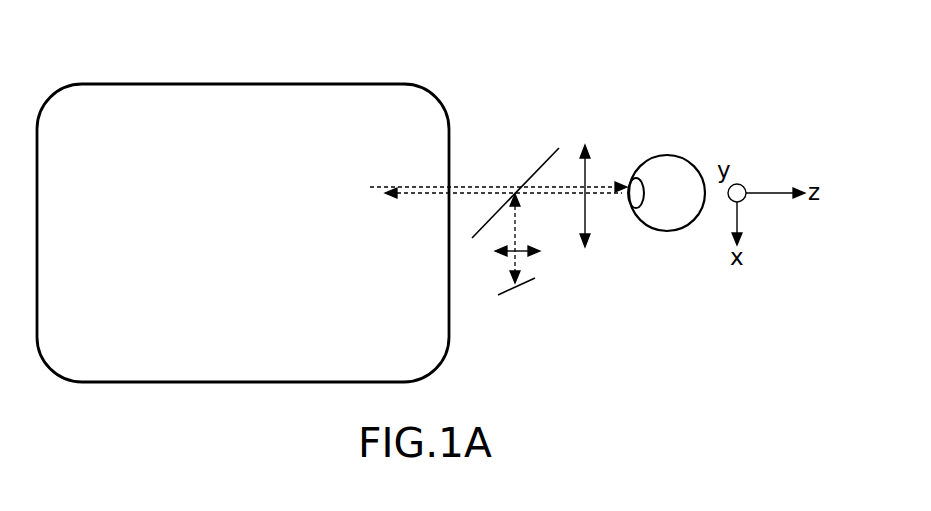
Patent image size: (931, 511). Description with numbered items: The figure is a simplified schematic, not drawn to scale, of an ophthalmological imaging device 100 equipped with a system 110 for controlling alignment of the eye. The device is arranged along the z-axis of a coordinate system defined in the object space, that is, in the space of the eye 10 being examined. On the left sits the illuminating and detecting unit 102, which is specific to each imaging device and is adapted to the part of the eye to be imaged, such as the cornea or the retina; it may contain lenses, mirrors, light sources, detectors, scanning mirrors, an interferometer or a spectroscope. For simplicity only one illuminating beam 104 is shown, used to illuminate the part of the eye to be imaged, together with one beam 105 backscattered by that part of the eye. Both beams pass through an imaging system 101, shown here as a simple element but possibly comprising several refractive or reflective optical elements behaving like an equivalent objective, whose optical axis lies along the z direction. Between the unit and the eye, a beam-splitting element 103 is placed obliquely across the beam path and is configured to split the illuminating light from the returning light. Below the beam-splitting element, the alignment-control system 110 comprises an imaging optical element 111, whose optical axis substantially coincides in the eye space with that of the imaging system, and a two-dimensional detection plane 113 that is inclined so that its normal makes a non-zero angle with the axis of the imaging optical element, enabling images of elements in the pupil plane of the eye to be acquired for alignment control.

The ophthalmological imaging device 100 is at (655, 62).
The illuminating and detecting unit 102 is at (435, 95).
The beam-splitting element 103 is at (538, 162).
The illuminating beam 104 is at (463, 183).
The backscattered beam 105 is at (430, 195).
The imaging system 101 is at (590, 167).
The eye 10 is at (672, 172).
The imaging optical element 111 is at (542, 257).
The two-dimensional detection plane 113 is at (505, 292).
The system for controlling alignment of the eye 110 is at (560, 285).